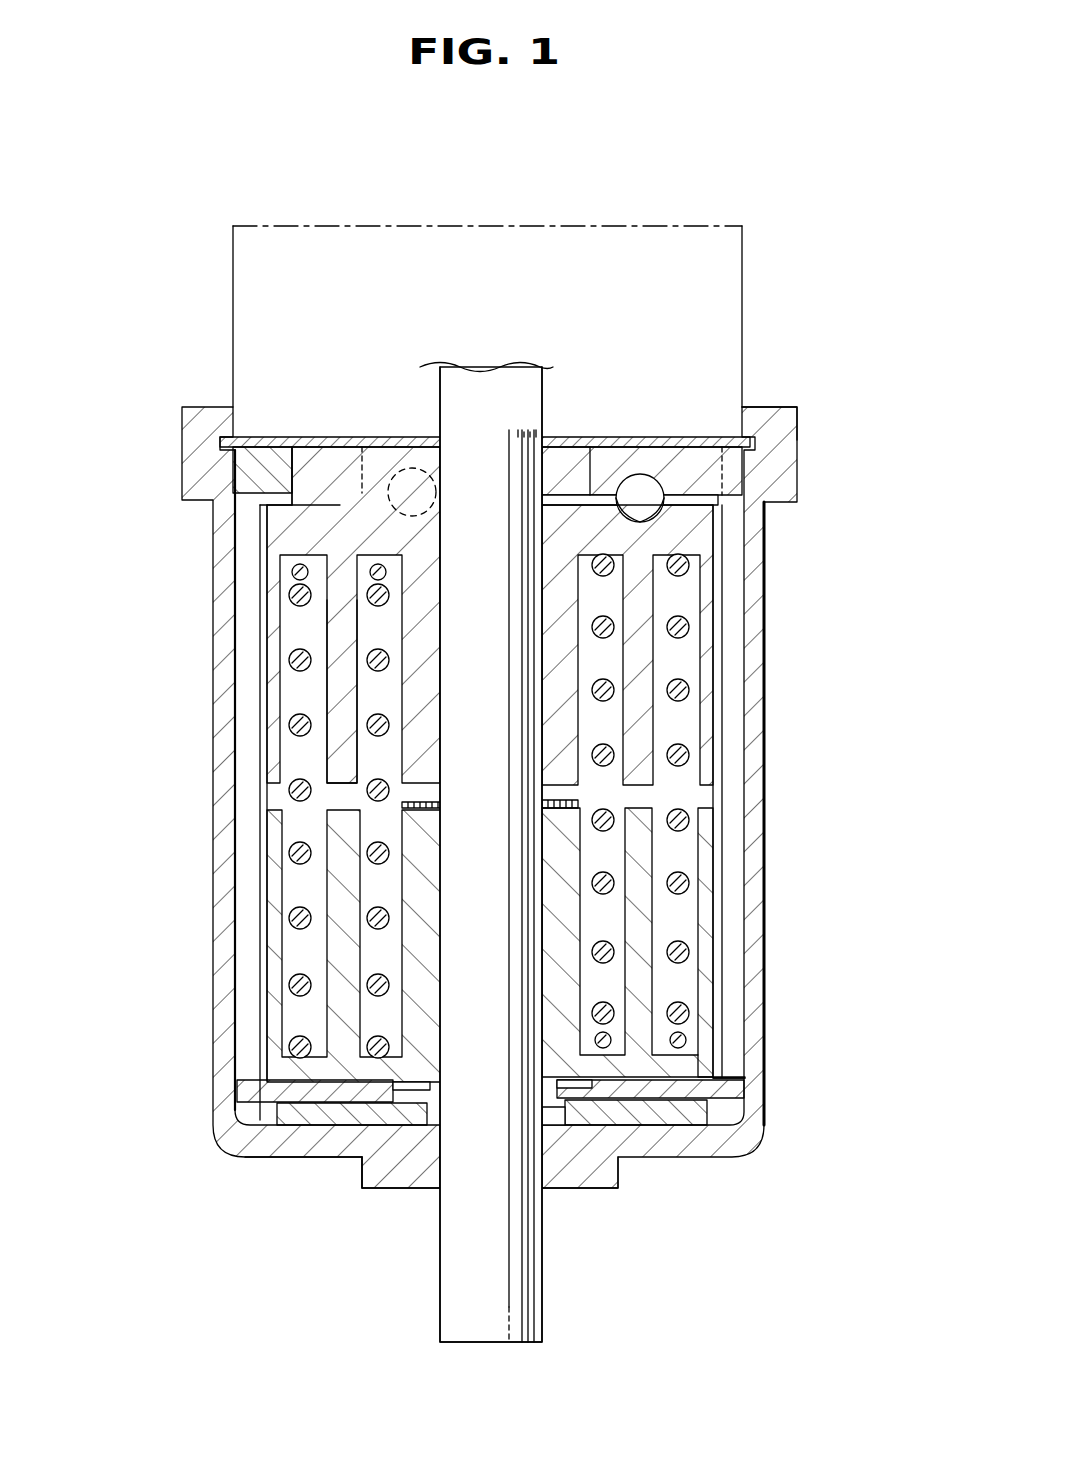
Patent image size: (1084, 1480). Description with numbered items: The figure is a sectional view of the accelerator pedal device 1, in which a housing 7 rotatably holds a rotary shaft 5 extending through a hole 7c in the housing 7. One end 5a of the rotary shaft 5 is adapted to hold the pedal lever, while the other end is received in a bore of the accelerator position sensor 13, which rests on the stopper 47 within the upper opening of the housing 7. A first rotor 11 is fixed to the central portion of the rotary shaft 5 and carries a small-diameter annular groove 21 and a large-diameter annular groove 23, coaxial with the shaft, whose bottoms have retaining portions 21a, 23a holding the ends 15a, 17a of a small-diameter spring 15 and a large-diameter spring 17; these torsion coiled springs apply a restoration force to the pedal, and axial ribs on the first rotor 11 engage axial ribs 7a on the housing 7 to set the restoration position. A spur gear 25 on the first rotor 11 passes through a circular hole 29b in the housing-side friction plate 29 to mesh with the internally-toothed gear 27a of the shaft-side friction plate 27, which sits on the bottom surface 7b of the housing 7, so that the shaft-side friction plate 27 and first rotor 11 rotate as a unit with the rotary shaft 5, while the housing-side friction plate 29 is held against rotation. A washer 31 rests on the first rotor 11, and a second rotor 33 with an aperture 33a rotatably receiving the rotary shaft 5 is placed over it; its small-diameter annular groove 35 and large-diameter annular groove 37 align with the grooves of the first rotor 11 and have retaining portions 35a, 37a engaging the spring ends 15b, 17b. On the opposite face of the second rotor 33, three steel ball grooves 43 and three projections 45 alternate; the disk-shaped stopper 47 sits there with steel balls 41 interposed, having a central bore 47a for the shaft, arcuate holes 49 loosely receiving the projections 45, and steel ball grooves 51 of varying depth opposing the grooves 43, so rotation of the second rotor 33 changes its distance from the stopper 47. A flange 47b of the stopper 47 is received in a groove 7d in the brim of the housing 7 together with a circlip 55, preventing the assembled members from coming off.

The accelerator pedal device 1 is at (832, 606).
The rotary shaft 5 is at (490, 762).
The one end of the rotary shaft 5a is at (520, 1308).
The housing 7 is at (752, 650).
The axial ribs 7a is at (250, 985).
The bottom surface of the housing 7b is at (632, 1160).
The hole 7c is at (445, 1162).
The groove 7d is at (727, 442).
The first rotor 11 is at (748, 1128).
The accelerator position sensor 13 is at (712, 226).
The small-diameter spring 15 is at (600, 808).
The end of the small-diameter spring 15a is at (693, 1105).
The end of the small-diameter spring 15b is at (455, 600).
The large-diameter spring 17 is at (685, 830).
The end of the large-diameter spring 17a is at (612, 1045).
The end of the large-diameter spring 17b is at (296, 564).
The small-diameter annular groove 21 is at (615, 905).
The retaining portion 21a is at (740, 1090).
The large-diameter annular groove 23 is at (683, 985).
The retaining portion 23a is at (688, 1032).
The spur gear 25 is at (556, 1128).
The shaft-side friction plate 27 is at (312, 1158).
The internally-toothed gear 27a is at (372, 1185).
The housing-side friction plate 29 is at (290, 1103).
The circular hole 29b is at (315, 1078).
The washer 31 is at (397, 812).
The second rotor 33 is at (270, 525).
The aperture 33a is at (345, 678).
The small-diameter annular groove 35 is at (292, 757).
The retaining portion 35a is at (374, 580).
The large-diameter annular groove 37 is at (265, 800).
The retaining portion 37a is at (292, 512).
The steel balls 41 is at (662, 497).
The steel ball grooves 43 is at (640, 507).
The projections 45 is at (306, 452).
The stopper 47 is at (760, 472).
The central bore 47a is at (536, 462).
The flange 47b is at (772, 445).
The arcuate holes 49 is at (312, 465).
The steel ball grooves 51 is at (362, 440).
The circlip 55 is at (600, 447).